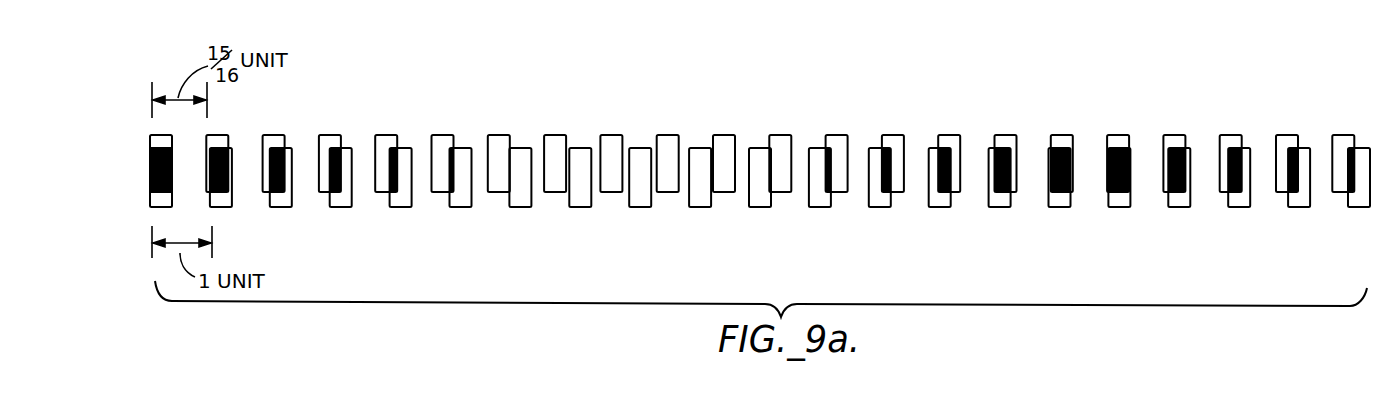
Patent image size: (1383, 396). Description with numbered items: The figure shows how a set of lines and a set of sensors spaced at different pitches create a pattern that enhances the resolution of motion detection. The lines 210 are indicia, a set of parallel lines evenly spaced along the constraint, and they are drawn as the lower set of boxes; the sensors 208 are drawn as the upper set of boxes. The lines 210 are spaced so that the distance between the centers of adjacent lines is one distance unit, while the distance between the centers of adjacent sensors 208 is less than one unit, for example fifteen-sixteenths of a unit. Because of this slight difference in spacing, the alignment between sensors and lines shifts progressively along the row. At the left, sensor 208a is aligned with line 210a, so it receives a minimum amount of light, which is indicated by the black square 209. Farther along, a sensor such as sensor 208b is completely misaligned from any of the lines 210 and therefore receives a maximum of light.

The sensors 208 is at (442, 135).
The sensor 208a is at (168, 138).
The sensor 208b is at (610, 135).
The black square 209 is at (173, 175).
The lines 210 is at (462, 207).
The line 210a is at (167, 197).